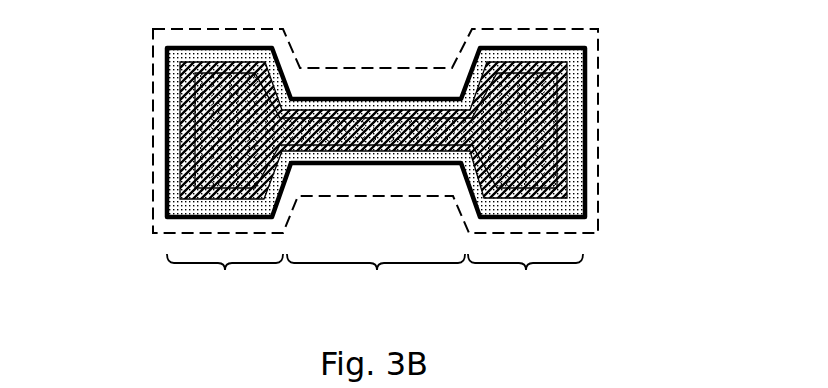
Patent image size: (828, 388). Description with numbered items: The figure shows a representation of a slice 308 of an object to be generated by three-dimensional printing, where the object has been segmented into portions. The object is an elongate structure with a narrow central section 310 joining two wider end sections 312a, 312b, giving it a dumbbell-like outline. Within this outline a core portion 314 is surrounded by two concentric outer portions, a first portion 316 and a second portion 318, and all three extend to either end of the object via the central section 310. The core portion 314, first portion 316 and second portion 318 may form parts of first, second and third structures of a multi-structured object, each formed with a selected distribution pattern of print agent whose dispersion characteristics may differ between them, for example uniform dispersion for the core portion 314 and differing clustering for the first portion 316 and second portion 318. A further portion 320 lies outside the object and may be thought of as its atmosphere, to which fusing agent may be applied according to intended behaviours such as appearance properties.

The slice 308 is at (122, 56).
The narrow central section 310 is at (376, 281).
The first wider end section 312a is at (225, 281).
The second wider end section 312b is at (525, 281).
The core portion 314 is at (530, 97).
The first portion 316 is at (548, 124).
The second portion 318 is at (575, 168).
The further portion 320 is at (590, 207).